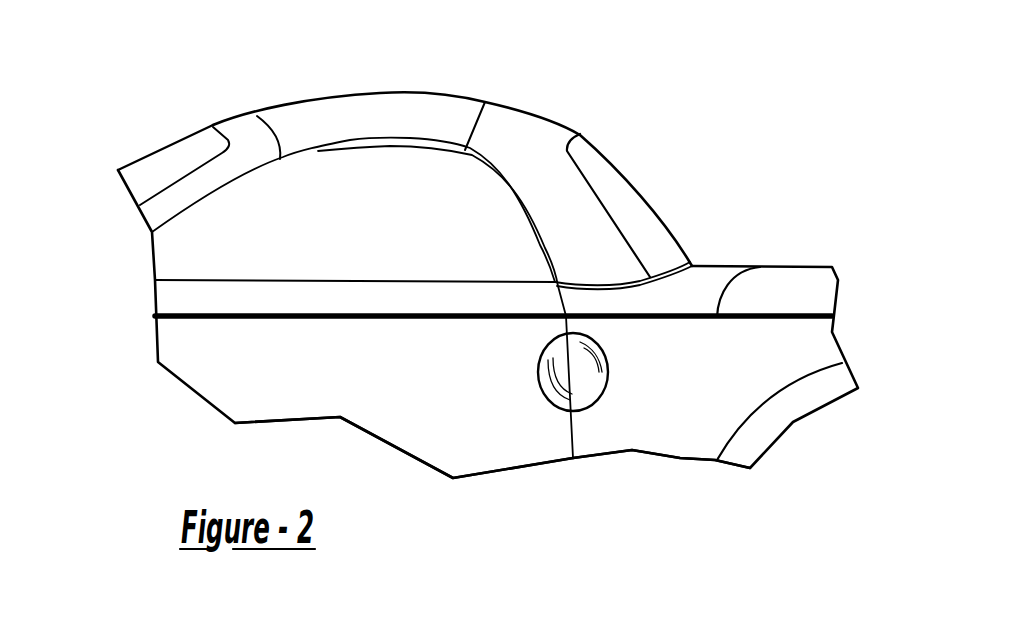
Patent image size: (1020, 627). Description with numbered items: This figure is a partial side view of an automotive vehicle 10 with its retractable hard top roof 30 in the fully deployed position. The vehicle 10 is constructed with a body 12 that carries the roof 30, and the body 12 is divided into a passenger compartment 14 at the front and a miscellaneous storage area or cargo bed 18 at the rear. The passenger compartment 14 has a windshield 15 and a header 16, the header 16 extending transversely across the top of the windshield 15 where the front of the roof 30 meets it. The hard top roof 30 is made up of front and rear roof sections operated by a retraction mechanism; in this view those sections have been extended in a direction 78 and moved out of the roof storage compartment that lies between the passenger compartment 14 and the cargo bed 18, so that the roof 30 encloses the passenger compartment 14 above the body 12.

The vehicle 10 is at (821, 237).
The body 12 is at (607, 456).
The passenger compartment 14 is at (460, 460).
The windshield 15 is at (172, 142).
The header 16 is at (240, 118).
The cargo bed 18 is at (840, 343).
The retractable hard top roof 30 is at (532, 93).
The direction of extension 78 is at (615, 105).